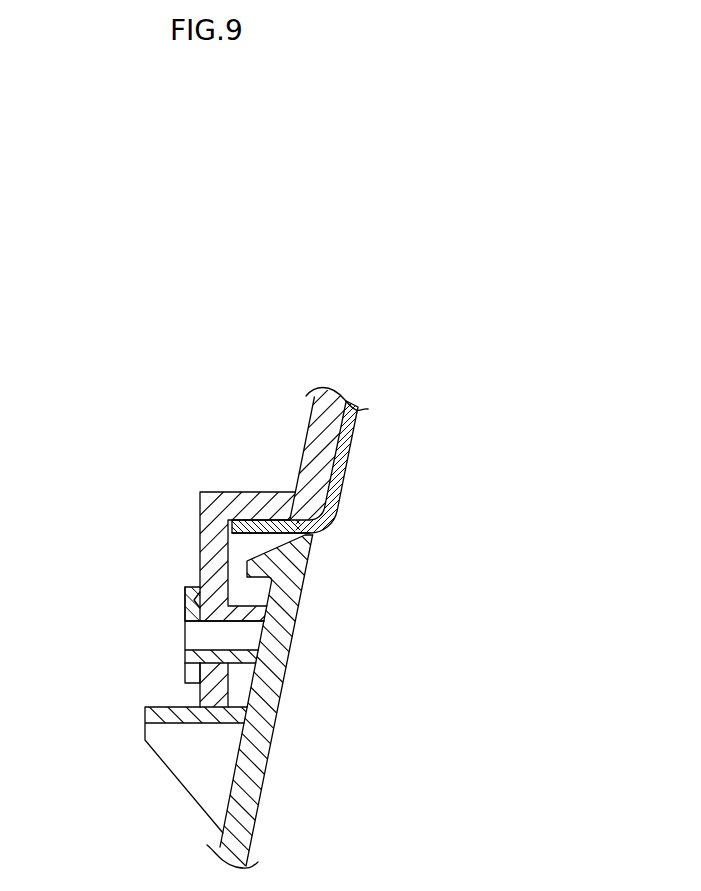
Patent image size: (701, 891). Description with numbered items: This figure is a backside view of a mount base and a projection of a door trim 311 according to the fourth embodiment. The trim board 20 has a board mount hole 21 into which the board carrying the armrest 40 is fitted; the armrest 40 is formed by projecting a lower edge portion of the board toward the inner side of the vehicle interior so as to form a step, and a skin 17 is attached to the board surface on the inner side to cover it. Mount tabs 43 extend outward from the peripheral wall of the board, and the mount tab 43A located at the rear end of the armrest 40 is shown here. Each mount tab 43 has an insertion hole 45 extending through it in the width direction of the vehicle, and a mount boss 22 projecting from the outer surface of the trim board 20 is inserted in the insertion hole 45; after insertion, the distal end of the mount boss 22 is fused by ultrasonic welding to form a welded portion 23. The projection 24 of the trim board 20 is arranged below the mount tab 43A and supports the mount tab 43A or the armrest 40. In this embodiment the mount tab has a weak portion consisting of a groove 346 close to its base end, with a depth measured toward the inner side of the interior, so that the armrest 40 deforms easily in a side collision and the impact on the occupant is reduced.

The door trim 311 is at (344, 362).
The board mount hole 21 is at (290, 527).
The armrest 40 is at (331, 419).
The skin 17 is at (348, 462).
The groove 346 is at (217, 561).
The welded portion 23 is at (197, 597).
The mount tab 43A is at (220, 584).
The mount tab 43 is at (321, 570).
The insertion hole 45 is at (198, 624).
The mount boss 22 is at (222, 657).
The projection 24 is at (173, 717).
The trim board 20 is at (257, 755).